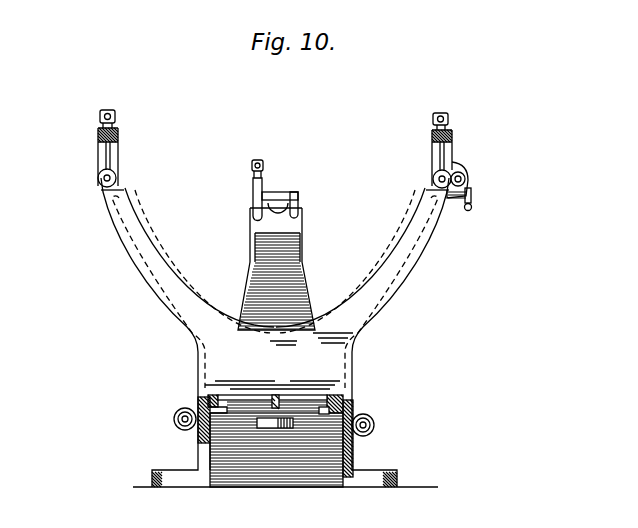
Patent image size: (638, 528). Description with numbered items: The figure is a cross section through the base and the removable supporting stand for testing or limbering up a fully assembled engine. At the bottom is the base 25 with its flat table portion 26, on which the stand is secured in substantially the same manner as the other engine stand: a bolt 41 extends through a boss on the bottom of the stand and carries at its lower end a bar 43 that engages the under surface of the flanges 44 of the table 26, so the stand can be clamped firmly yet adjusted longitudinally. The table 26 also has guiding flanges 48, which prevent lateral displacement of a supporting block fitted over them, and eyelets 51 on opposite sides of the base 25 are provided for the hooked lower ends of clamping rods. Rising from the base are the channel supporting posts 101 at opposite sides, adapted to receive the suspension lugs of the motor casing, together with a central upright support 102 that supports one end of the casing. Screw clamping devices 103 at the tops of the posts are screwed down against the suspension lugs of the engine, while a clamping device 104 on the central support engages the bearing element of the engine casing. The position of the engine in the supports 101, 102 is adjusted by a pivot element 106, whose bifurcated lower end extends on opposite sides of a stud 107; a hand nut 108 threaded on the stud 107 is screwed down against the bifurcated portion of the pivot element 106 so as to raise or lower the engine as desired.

The channel supporting posts 101 is at (408, 279).
The central upright support 102 is at (303, 266).
The screw clamping devices 103 is at (97, 132).
The clamping device 104 is at (278, 196).
The pivot element 106 is at (463, 162).
The stud 107 is at (473, 197).
The hand nut 108 is at (473, 207).
The base 25 is at (354, 453).
The table portion 26 is at (197, 430).
The bolt 41 is at (276, 395).
The bar 43 is at (263, 429).
The flanges 44 is at (325, 414).
The guiding flanges 48 is at (337, 397).
The eyelets 51 is at (177, 414).